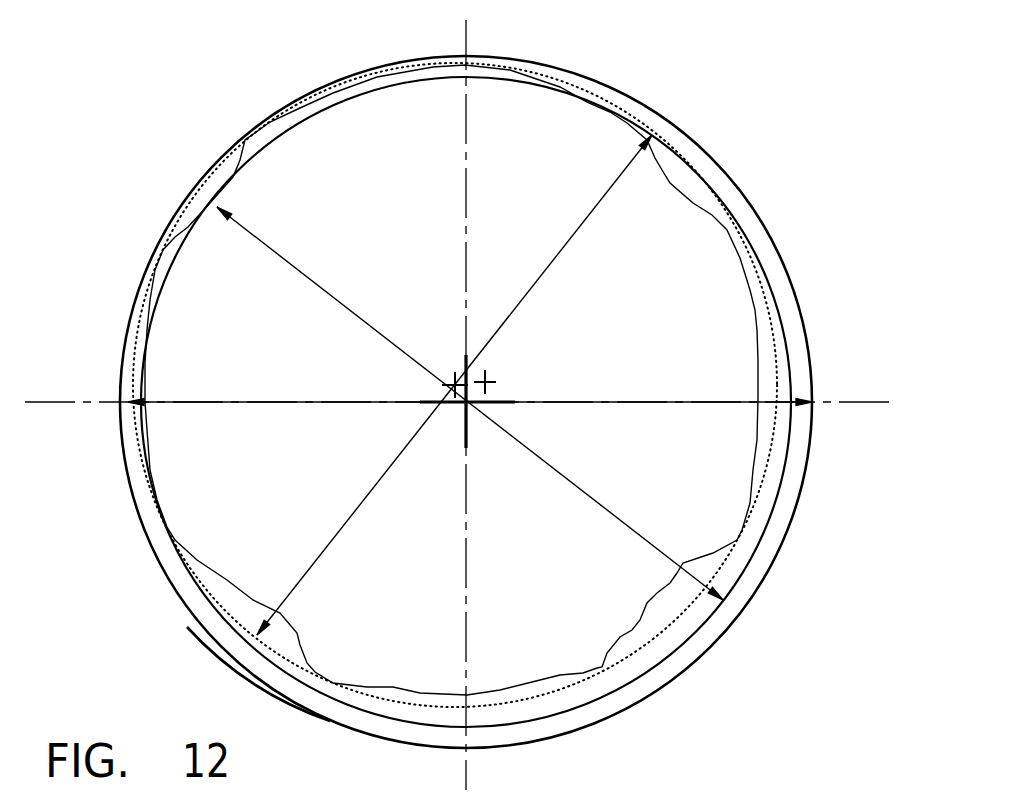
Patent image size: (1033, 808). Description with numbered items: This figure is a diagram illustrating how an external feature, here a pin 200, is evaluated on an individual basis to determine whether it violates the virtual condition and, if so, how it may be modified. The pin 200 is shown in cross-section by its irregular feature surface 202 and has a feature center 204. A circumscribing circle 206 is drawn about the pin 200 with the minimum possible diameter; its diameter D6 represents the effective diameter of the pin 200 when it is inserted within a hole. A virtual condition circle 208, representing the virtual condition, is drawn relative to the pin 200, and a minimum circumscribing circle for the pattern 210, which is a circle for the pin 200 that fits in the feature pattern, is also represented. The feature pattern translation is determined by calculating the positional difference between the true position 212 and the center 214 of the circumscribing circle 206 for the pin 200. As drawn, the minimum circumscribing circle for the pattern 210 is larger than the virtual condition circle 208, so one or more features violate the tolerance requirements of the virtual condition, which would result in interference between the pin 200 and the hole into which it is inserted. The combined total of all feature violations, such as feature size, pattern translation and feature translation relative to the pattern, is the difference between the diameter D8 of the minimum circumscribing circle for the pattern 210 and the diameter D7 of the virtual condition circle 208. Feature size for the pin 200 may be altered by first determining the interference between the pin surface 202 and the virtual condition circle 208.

The pin 200 is at (583, 143).
The feature surface 202 is at (230, 148).
The feature center 204 is at (441, 365).
The circumscribing circle 206 is at (594, 88).
The virtual condition circle 208 is at (625, 685).
The minimum circumscribing circle for the pattern 210 is at (248, 673).
The true position 212 is at (497, 380).
The center of circumscribing circle 214 is at (455, 420).
The diameter of the minimum circumscribing circle D6 is at (537, 283).
The diameter of the virtual condition circle D7 is at (568, 480).
The diameter of the minimum circumscribing circle for the pattern D8 is at (253, 403).